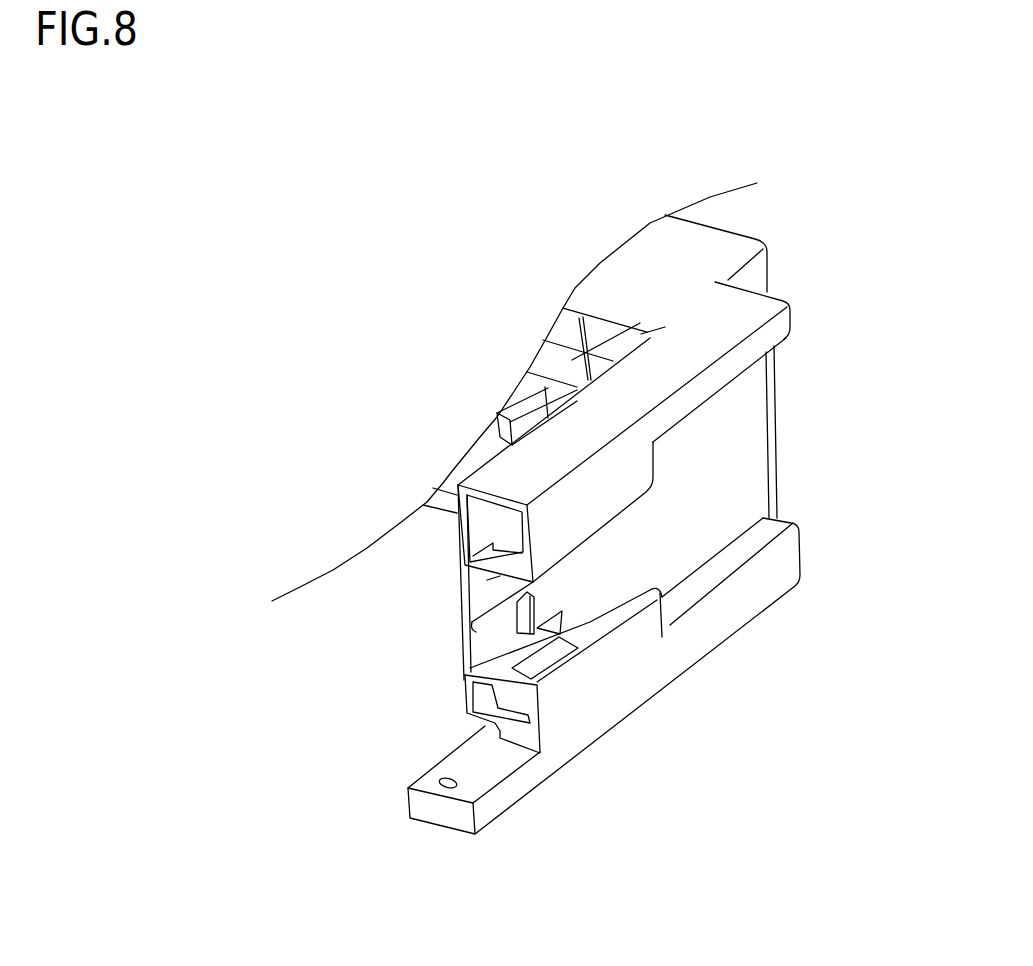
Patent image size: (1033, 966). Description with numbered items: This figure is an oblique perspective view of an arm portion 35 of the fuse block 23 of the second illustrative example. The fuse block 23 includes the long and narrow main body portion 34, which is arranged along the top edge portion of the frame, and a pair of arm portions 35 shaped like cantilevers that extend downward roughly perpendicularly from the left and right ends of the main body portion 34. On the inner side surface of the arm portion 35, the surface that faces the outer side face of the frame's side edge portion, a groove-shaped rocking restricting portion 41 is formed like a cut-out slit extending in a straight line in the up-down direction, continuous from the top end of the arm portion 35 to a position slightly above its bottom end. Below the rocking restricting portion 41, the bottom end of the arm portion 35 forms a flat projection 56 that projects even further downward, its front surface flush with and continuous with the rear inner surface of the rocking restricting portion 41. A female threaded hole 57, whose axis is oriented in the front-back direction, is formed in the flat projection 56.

The fuse block 23 is at (845, 262).
The main body portion 34 is at (655, 253).
The arm portion 35 is at (768, 585).
The rocking restricting portion 41 is at (502, 738).
The flat projection 56 is at (413, 836).
The female threaded hole 57 is at (440, 782).